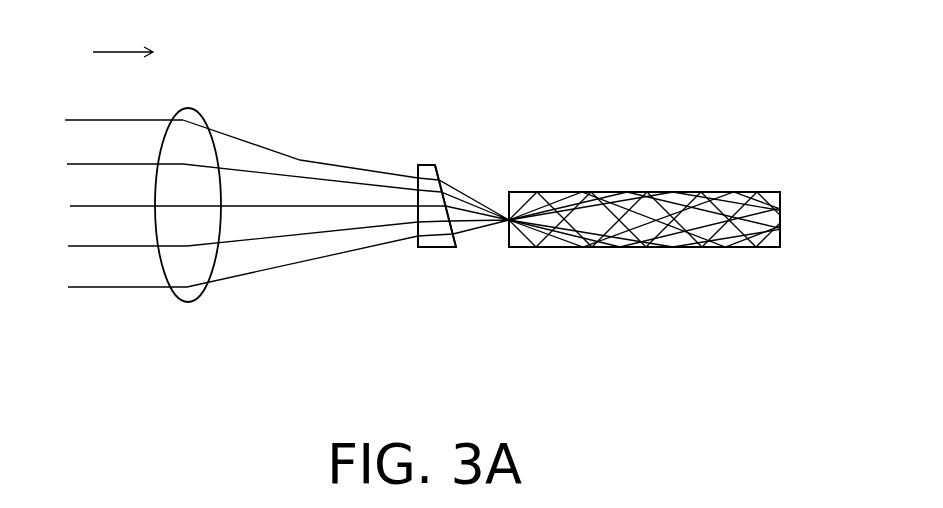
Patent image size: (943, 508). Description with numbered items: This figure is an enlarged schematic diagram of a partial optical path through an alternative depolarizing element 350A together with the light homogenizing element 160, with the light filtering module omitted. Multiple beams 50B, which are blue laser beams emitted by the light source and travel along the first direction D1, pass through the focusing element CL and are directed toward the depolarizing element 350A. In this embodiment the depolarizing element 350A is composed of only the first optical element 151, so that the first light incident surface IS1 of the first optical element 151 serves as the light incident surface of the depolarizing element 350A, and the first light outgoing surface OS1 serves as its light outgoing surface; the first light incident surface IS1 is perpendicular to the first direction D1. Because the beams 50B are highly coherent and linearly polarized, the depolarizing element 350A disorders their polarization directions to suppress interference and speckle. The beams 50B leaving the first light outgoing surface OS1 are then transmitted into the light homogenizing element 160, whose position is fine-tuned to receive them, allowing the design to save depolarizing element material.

The depolarizing element 350A is at (453, 92).
The first optical element 151 is at (427, 172).
The light homogenizing element 160 is at (683, 193).
The beams 50B is at (100, 248).
The focusing element CL is at (190, 115).
The first light incident surface IS1 is at (418, 238).
The first light outgoing surface OS1 is at (456, 237).
The first direction D1 is at (123, 36).